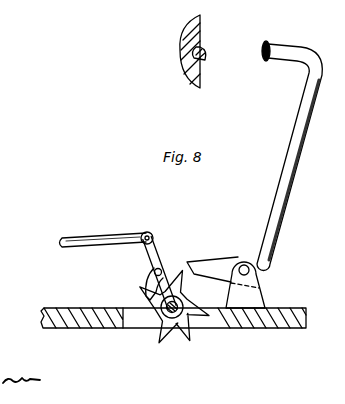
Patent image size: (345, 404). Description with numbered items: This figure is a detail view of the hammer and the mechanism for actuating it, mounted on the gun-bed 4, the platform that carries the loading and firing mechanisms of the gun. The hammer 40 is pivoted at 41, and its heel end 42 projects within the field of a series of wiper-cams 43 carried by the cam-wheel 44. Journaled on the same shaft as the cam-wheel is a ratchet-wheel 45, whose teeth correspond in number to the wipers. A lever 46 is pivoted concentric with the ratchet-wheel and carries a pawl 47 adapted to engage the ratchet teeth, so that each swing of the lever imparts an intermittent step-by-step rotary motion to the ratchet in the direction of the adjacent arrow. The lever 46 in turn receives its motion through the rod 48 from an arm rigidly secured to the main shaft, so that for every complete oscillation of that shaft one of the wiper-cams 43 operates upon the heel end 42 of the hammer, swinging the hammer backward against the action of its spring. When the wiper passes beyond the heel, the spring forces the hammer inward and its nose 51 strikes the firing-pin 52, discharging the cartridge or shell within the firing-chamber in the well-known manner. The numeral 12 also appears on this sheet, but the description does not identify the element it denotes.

The gun-bed 4 is at (280, 328).
The stop member 12 is at (201, 34).
The firing-pin 52 is at (204, 57).
The hammer 40 is at (300, 158).
The nose 51 is at (272, 50).
The rod 48 is at (83, 248).
The lever 46 is at (145, 252).
The pawl 47 is at (161, 270).
The ratchet-wheel 45 is at (152, 311).
The cam-wheel 44 is at (155, 328).
The wiper-cams 43 is at (189, 286).
The heel end 42 is at (220, 257).
The pivot 41 is at (258, 274).